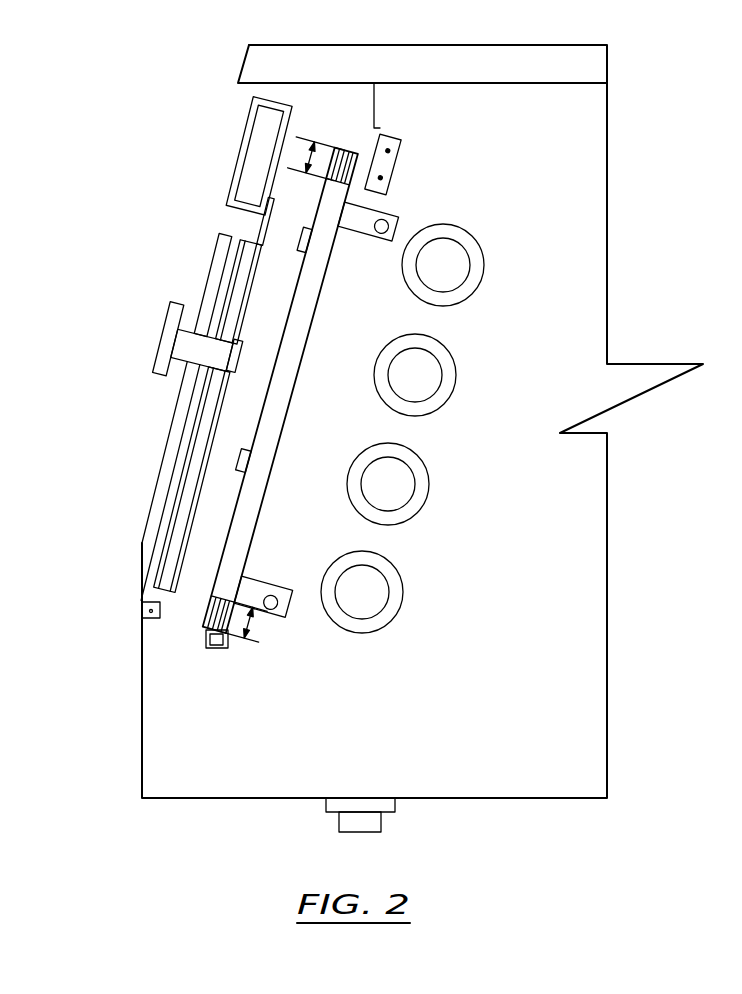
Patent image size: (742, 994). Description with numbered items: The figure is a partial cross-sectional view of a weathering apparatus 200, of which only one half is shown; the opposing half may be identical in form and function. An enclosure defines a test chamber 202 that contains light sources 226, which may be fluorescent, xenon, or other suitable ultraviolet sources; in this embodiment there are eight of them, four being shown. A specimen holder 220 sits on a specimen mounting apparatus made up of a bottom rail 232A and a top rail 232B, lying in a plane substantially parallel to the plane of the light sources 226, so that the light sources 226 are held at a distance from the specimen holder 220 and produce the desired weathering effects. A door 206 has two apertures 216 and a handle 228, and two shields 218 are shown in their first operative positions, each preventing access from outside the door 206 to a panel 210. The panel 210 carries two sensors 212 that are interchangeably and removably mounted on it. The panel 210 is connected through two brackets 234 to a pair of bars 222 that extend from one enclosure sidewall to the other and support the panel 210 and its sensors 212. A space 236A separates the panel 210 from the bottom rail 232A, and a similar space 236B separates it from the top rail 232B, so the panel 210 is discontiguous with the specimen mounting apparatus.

The apparatus 200 is at (630, 95).
The test chamber 202 is at (560, 139).
The door 206 is at (259, 156).
The panel 210 is at (280, 391).
The sensors 212 is at (274, 350).
The apertures 216 is at (179, 416).
The shields 218 is at (214, 393).
The specimen holder 220 is at (280, 391).
The bars 222 is at (326, 414).
The light sources 226 is at (469, 270).
The handle 228 is at (200, 347).
The bottom rail 232A is at (214, 650).
The top rail 232B is at (383, 164).
The brackets 234 is at (316, 410).
The space 236A is at (246, 622).
The space 236B is at (315, 159).